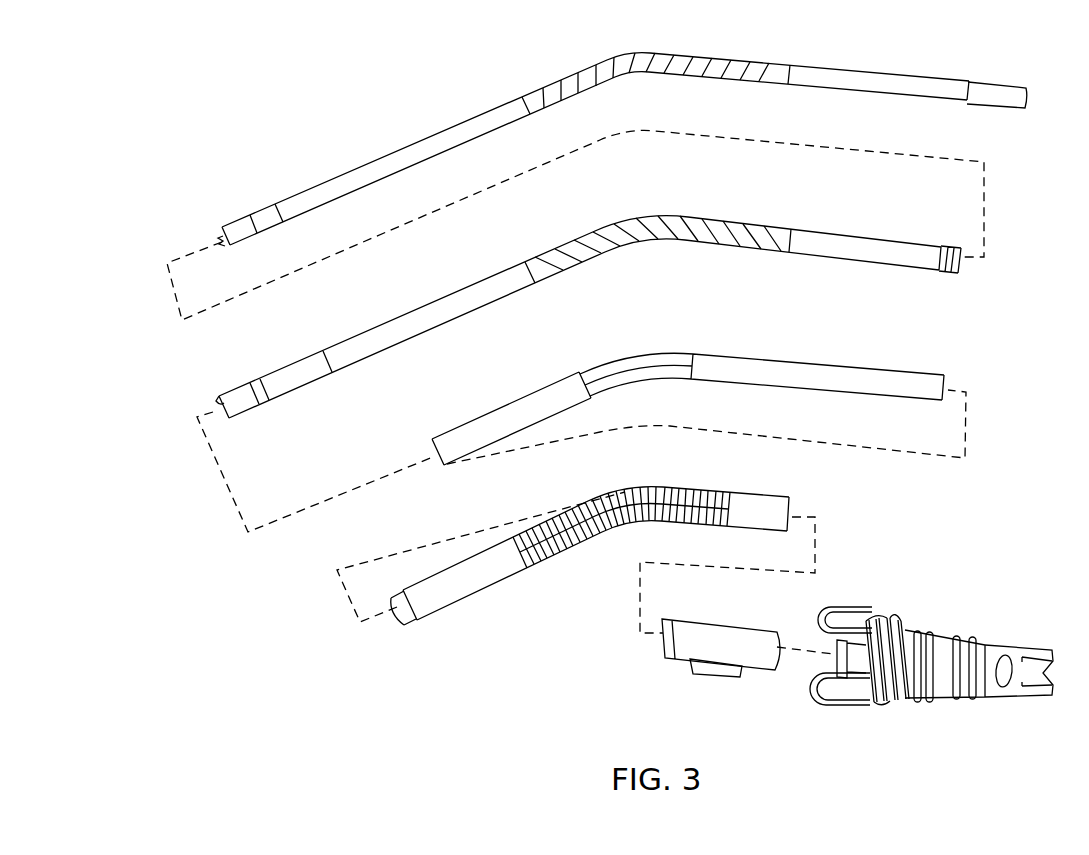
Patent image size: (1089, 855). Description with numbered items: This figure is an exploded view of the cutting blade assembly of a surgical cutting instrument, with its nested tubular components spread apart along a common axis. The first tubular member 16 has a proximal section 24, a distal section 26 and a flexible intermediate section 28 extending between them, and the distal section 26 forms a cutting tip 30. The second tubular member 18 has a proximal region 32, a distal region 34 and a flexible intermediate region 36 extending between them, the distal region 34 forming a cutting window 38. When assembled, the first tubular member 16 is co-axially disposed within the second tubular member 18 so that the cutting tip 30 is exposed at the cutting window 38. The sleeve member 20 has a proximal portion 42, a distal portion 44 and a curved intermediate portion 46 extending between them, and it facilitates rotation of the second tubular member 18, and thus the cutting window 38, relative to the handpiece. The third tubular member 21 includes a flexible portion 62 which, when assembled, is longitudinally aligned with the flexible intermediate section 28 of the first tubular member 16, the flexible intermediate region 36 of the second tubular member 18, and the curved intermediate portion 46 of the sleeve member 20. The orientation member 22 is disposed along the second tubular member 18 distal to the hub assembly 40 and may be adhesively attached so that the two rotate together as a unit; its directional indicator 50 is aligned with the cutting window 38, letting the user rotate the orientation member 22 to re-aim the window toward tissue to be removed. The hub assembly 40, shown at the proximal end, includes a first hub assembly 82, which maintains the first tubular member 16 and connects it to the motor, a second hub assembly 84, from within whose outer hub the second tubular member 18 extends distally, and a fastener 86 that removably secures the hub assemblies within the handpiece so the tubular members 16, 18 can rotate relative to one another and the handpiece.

The first tubular member 16 is at (612, 149).
The second tubular member 18 is at (578, 292).
The sleeve member 20 is at (687, 381).
The third tubular member 21 is at (590, 537).
The orientation member 22 is at (721, 655).
The proximal section 24 is at (976, 106).
The distal section 26 is at (250, 215).
The intermediate section 28 is at (645, 76).
The cutting tip 30 is at (221, 238).
The proximal region 32 is at (900, 240).
The distal region 34 is at (256, 383).
The intermediate region 36 is at (641, 216).
The cutting window 38 is at (219, 398).
The hub assembly 40 is at (931, 672).
The proximal portion 42 is at (887, 370).
The distal portion 44 is at (455, 438).
The intermediate portion 46 is at (658, 353).
The directional indicator 50 is at (708, 677).
The flexible portion 62 is at (592, 503).
The first hub assembly 82 is at (1001, 696).
The second hub assembly 84 is at (928, 699).
The fastener 86 is at (838, 704).